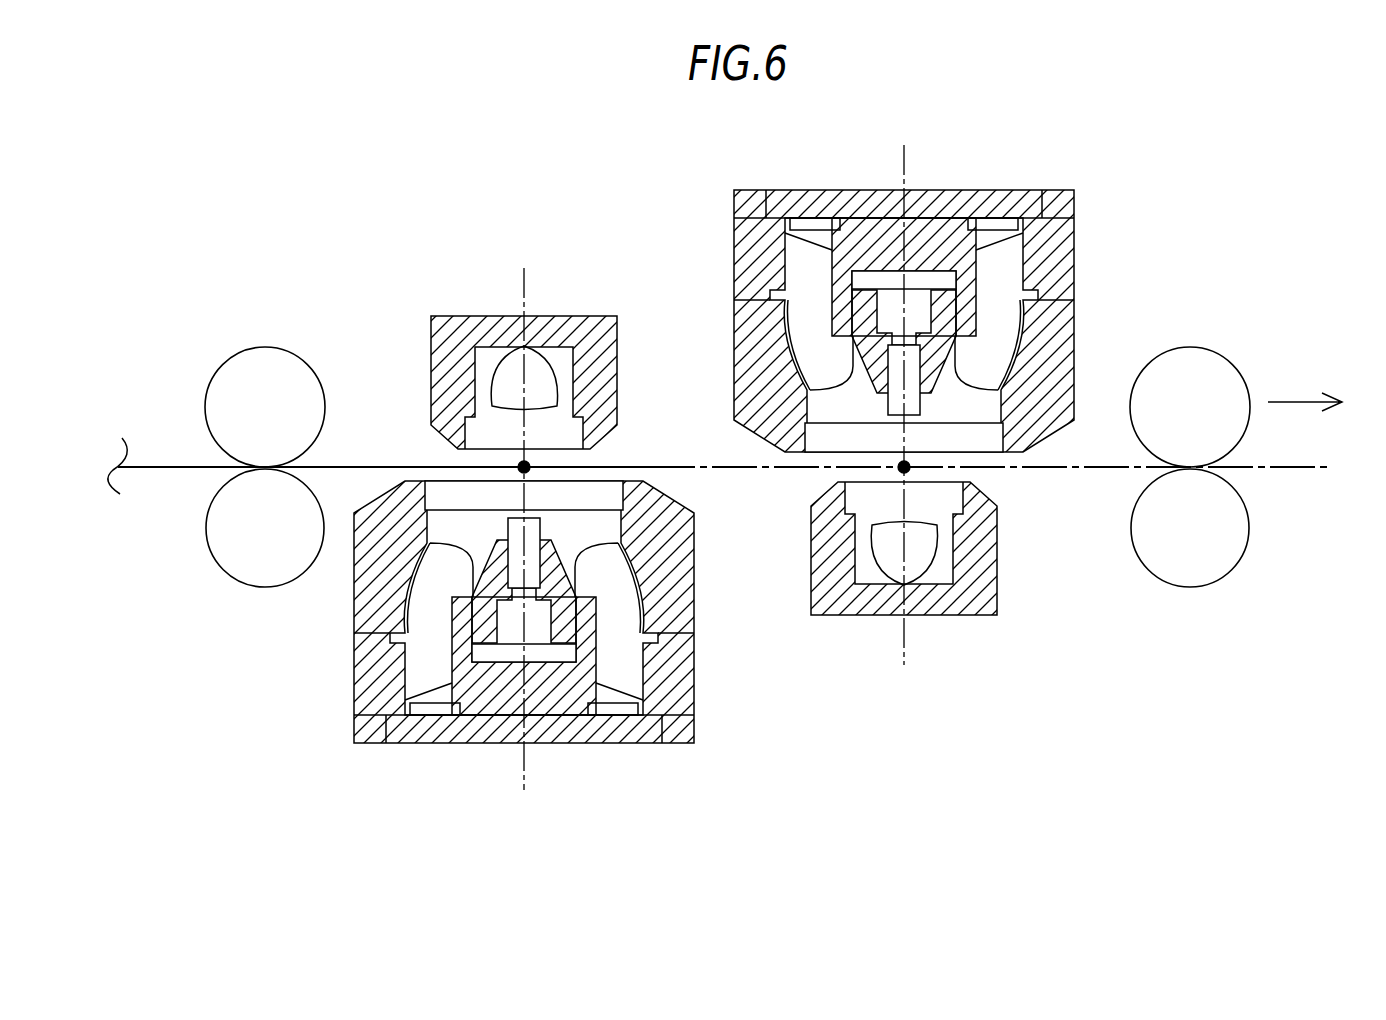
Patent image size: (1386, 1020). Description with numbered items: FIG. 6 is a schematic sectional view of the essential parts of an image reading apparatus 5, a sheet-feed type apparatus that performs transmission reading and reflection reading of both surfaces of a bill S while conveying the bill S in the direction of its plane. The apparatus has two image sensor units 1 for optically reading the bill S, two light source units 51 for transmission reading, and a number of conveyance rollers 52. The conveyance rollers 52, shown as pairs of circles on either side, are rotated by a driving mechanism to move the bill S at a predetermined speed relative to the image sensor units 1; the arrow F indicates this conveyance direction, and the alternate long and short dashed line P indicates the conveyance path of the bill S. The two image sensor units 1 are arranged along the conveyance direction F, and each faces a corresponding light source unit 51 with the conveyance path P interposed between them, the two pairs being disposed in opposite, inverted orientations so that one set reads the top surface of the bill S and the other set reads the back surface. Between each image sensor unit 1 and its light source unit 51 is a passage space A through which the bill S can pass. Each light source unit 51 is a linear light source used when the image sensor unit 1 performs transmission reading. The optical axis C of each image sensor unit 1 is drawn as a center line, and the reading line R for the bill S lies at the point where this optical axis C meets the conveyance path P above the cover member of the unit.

The image sensor unit 1 is at (1094, 161).
The image reading apparatus 5 is at (1142, 813).
The light source unit for transmission reading 51 is at (483, 317).
The conveyance rollers 52 is at (265, 347).
The bill S is at (367, 467).
The conveyance path P is at (1004, 473).
The conveyance direction F is at (1305, 392).
The optical axis C is at (719, 483).
The reading line R is at (532, 466).
The passage space A is at (467, 461).